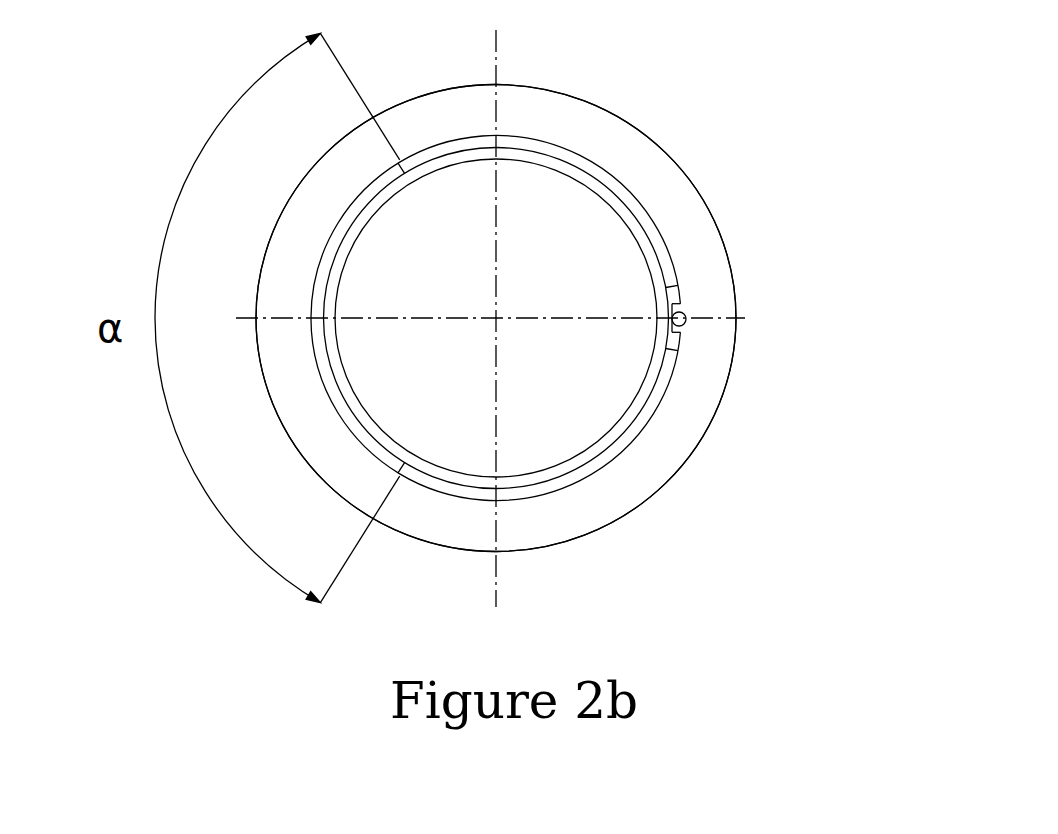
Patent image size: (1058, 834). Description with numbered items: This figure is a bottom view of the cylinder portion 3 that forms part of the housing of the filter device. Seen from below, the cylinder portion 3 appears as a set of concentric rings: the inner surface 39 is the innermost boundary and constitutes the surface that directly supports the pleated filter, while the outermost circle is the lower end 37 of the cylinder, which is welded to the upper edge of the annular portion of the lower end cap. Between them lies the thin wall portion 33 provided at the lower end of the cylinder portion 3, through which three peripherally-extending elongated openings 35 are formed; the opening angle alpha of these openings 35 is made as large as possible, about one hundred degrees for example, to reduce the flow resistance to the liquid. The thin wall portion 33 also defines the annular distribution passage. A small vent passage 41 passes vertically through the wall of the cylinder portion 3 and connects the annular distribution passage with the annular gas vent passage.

The cylinder portion 3 is at (712, 425).
The thin wall portion 33 is at (448, 490).
The peripherally-extending elongated openings 35 is at (658, 240).
The lower end 37 is at (642, 147).
The inner surface 39 is at (365, 227).
The vent passage 41 is at (686, 312).